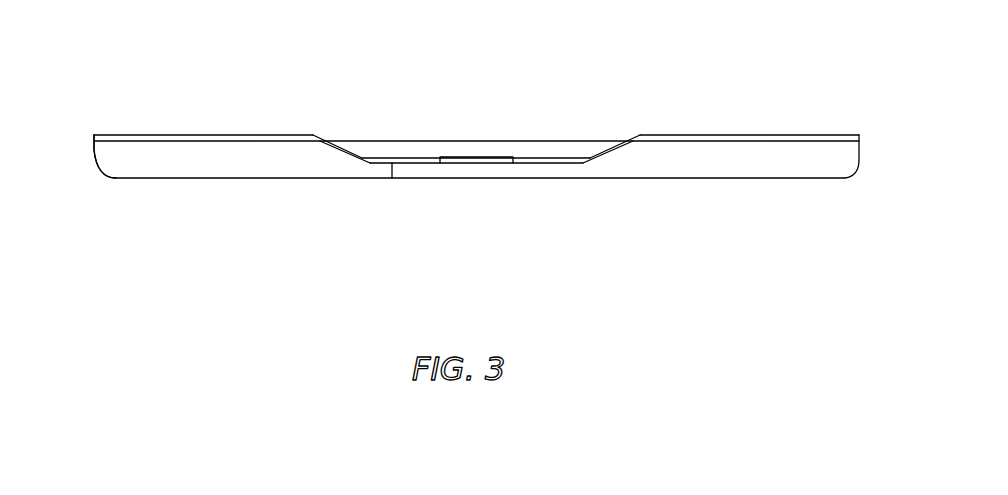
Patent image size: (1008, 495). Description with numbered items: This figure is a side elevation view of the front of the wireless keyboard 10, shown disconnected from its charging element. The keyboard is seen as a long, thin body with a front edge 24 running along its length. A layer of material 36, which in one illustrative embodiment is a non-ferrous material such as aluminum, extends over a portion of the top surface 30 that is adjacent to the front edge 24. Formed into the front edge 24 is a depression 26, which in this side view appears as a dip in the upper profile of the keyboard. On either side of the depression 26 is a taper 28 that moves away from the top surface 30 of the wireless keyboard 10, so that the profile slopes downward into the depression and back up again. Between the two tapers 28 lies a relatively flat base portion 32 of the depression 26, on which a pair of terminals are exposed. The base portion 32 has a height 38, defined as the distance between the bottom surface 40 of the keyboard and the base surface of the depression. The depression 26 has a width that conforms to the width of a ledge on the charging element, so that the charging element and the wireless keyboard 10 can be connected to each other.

The wireless keyboard 10 is at (225, 247).
The front edge 24 is at (772, 166).
The depression 26 is at (525, 157).
The taper 28 is at (353, 153).
The top surface 30 is at (240, 136).
The base portion 32 is at (433, 157).
The layer of material 36 is at (740, 137).
The height 38 is at (388, 172).
The bottom surface 40 is at (175, 177).